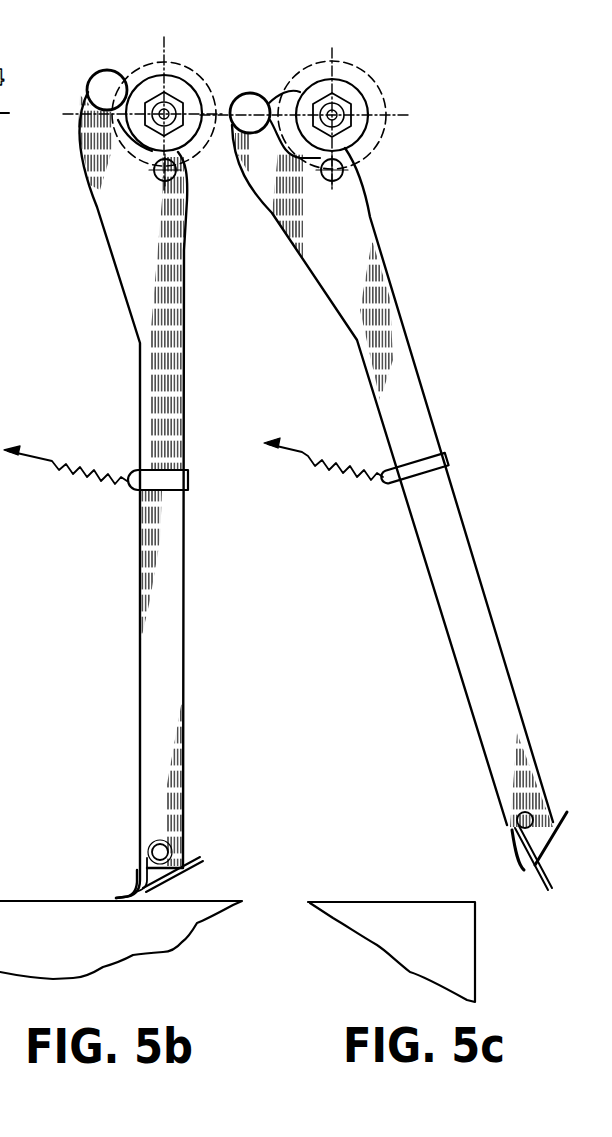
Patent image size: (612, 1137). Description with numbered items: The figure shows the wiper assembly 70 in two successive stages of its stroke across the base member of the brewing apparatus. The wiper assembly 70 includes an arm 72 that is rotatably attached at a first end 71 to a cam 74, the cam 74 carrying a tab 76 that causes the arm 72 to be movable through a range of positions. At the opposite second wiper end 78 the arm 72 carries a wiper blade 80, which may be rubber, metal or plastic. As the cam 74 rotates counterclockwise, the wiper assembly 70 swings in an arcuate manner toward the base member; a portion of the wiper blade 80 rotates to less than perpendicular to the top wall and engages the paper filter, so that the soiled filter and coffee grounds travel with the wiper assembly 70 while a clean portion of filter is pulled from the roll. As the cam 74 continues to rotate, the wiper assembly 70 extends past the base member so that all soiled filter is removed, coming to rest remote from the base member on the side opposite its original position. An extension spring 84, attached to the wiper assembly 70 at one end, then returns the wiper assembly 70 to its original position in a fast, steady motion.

In FIG. 5b, the wiper assembly 70 is at (138, 574).
In FIG. 5c, the wiper assembly 70 is at (430, 583).
In FIG. 5b, the first end 71 is at (100, 82).
In FIG. 5c, the first end 71 is at (250, 102).
In FIG. 5b, the arm 72 is at (185, 588).
In FIG. 5c, the arm 72 is at (485, 597).
In FIG. 5b, the cam 74 is at (188, 96).
In FIG. 5c, the cam 74 is at (355, 105).
In FIG. 5b, the tab 76 is at (142, 80).
In FIG. 5c, the tab 76 is at (298, 100).
In FIG. 5b, the second wiper end 78 is at (140, 856).
In FIG. 5c, the second wiper end 78 is at (510, 835).
In FIG. 5b, the wiper blade 80 is at (117, 897).
In FIG. 5c, the wiper blade 80 is at (535, 878).
In FIG. 5b, the extension spring 84 is at (90, 467).
In FIG. 5c, the extension spring 84 is at (338, 455).